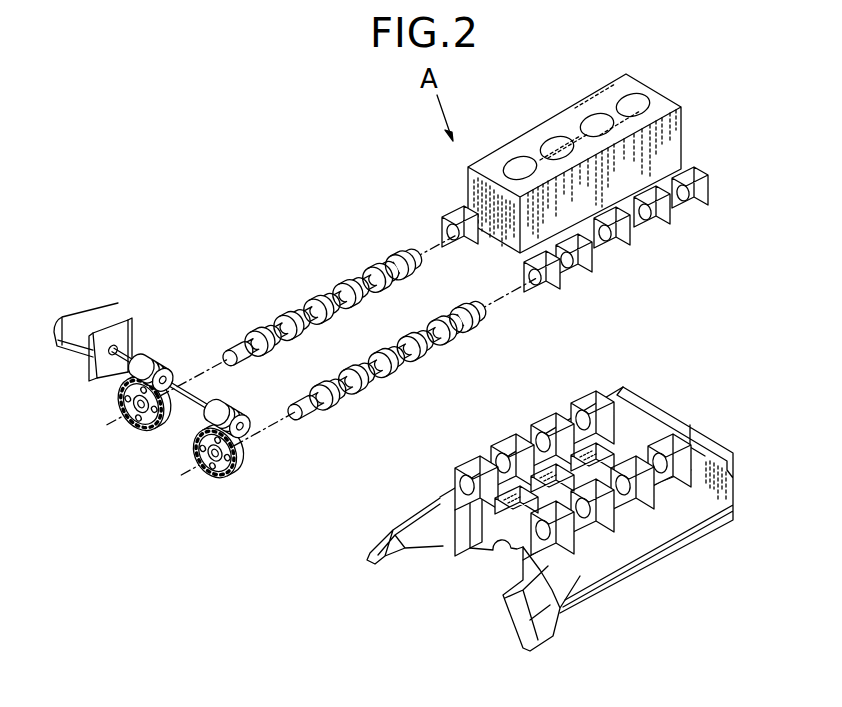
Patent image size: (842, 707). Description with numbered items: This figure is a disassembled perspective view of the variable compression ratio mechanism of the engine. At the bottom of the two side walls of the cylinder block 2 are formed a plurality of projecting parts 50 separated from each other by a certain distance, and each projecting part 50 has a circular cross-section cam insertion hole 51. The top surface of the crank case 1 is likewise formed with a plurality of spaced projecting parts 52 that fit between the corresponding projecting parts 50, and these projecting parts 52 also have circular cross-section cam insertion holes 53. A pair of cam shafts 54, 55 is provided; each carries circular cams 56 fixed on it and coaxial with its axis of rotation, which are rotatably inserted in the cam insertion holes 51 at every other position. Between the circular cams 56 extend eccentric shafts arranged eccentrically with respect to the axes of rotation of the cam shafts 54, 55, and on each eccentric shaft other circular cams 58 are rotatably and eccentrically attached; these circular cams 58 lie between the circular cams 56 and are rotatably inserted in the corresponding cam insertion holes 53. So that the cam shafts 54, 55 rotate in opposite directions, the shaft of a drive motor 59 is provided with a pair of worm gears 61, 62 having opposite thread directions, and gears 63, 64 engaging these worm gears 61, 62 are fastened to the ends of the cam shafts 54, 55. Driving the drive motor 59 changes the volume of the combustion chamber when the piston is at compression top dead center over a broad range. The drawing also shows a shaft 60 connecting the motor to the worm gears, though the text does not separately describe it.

The crank case 1 is at (600, 561).
The cylinder block 2 is at (670, 141).
The projecting parts 50 is at (450, 219).
The cam insertion holes 51 is at (443, 232).
The projecting parts 52 is at (591, 398).
The cam insertion holes 53 is at (497, 458).
The cam shaft 54 is at (428, 324).
The cam shaft 55 is at (310, 329).
The circular cams 56 is at (248, 340).
The circular cams 58 is at (262, 334).
The drive motor 59 is at (75, 320).
The drive shaft 60 is at (197, 404).
The worm gear 61 is at (238, 413).
The worm gear 62 is at (157, 360).
The gear 63 is at (222, 480).
The gear 64 is at (135, 422).